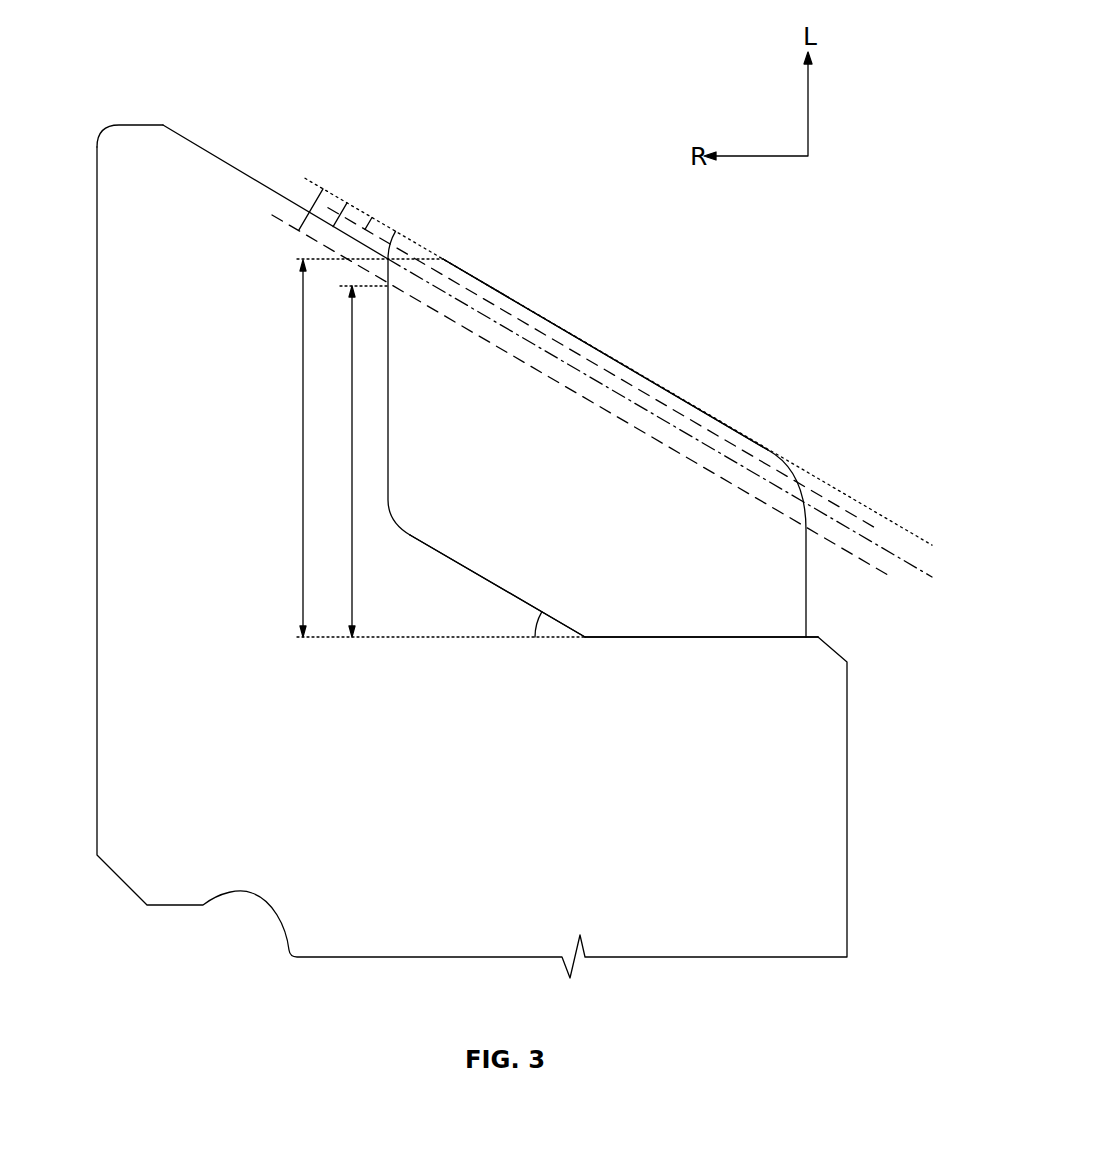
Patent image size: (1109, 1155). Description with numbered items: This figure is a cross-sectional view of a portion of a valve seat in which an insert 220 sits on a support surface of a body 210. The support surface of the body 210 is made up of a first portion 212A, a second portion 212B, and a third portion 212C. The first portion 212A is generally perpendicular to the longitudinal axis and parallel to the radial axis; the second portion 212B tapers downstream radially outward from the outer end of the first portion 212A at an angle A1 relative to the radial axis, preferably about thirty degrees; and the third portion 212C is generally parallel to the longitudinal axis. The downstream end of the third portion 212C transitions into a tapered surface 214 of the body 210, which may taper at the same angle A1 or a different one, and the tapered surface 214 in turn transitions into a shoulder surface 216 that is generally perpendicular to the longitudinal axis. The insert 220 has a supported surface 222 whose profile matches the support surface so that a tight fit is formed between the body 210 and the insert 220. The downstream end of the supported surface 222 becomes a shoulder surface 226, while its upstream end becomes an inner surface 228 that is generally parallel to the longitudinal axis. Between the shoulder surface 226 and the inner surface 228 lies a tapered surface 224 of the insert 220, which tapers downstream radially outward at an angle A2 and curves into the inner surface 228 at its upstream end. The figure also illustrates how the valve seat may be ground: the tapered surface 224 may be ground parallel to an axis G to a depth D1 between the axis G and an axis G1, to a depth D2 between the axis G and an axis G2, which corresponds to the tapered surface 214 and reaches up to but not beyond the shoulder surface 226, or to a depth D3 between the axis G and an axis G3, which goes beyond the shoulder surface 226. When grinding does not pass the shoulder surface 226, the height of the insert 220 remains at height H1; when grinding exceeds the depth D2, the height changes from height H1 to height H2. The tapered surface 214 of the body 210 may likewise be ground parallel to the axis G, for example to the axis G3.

The body 210 is at (180, 890).
The first portion 212A is at (752, 638).
The second portion 212B is at (480, 577).
The third portion 212C is at (388, 400).
The tapered surface 214 is at (203, 147).
The shoulder surface 216 is at (123, 128).
The insert 220 is at (433, 532).
The supported surface 222 is at (622, 637).
The tapered surface 224 is at (698, 407).
The shoulder surface 226 is at (433, 252).
The inner surface 228 is at (806, 597).
The height H1 is at (287, 448).
The height H2 is at (335, 461).
The depth D1 is at (358, 215).
The depth D2 is at (333, 205).
The depth D3 is at (313, 202).
The angle A1 is at (522, 622).
The angle A2 is at (388, 243).
The axis G is at (628, 372).
The axis G1 is at (619, 382).
The axis G2 is at (674, 429).
The axis G3 is at (595, 409).